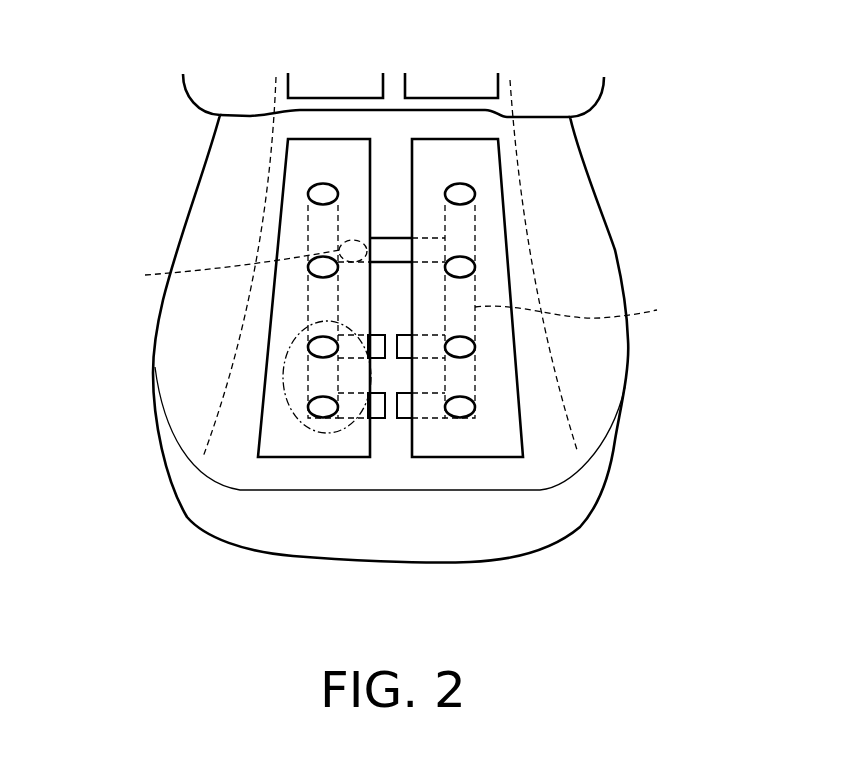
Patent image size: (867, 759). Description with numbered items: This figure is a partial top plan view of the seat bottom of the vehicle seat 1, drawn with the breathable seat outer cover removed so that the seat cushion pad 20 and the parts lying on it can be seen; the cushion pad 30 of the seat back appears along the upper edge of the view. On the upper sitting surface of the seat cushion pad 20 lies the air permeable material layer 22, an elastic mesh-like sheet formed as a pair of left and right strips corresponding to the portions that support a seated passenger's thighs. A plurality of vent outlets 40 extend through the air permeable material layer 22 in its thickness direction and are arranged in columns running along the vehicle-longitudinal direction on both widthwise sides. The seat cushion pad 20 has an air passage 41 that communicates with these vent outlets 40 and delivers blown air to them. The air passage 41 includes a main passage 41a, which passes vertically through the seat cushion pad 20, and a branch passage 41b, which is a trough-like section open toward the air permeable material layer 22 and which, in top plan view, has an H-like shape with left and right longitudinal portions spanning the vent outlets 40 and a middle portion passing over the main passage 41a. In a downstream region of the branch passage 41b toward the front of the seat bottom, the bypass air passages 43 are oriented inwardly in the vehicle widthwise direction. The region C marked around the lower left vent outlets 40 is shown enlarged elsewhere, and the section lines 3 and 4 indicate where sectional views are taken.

The vehicle seat 1 is at (185, 162).
The seat cushion pad 20 is at (603, 278).
The cushion pad 30 is at (590, 82).
The air permeable material layer 22 is at (295, 175).
The vent outlets 40 is at (308, 347).
The air passage 41 is at (391, 311).
The main passage 41a is at (195, 266).
The branch passage 41b is at (618, 303).
The bypass air passages 43 is at (375, 358).
The region C is at (285, 342).
The section line 3 is at (321, 0).
The section line 4 is at (200, 409).